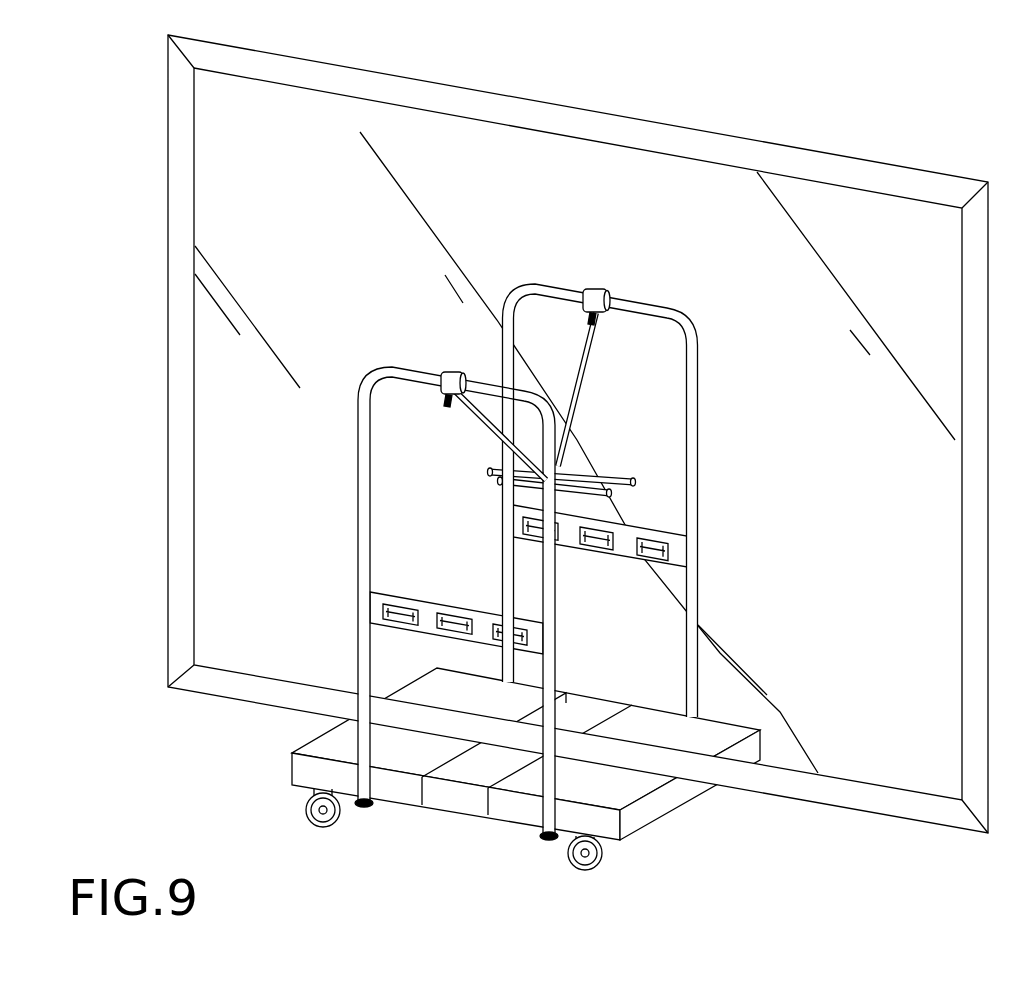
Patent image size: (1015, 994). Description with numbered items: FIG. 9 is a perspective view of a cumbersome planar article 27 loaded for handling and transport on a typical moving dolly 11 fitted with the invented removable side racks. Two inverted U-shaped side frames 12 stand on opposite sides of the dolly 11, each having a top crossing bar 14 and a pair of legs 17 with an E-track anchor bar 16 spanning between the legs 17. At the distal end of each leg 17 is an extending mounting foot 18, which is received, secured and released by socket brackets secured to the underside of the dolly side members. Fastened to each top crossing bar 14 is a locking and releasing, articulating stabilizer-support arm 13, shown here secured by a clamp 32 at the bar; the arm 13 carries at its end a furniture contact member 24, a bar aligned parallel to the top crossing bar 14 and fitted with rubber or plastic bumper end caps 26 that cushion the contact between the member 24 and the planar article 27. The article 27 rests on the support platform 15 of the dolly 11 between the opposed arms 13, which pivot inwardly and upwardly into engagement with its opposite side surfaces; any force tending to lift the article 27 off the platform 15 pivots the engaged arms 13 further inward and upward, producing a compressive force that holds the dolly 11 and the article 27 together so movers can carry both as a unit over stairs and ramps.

The moving dolly 11 is at (670, 828).
The inverted U-shaped side frame 12 is at (525, 543).
The articulating stabilizer-support arm 13 is at (584, 364).
The top crossing bar 14 is at (637, 300).
The support platform 15 is at (312, 748).
The E-track anchor bar 16 is at (624, 568).
The side frame leg 17 is at (701, 552).
The mounting foot 18 is at (380, 814).
The furniture contact member 24 is at (502, 489).
The bumper end cap 26 is at (487, 474).
The planar article 27 is at (851, 155).
The clamp 32 is at (595, 288).